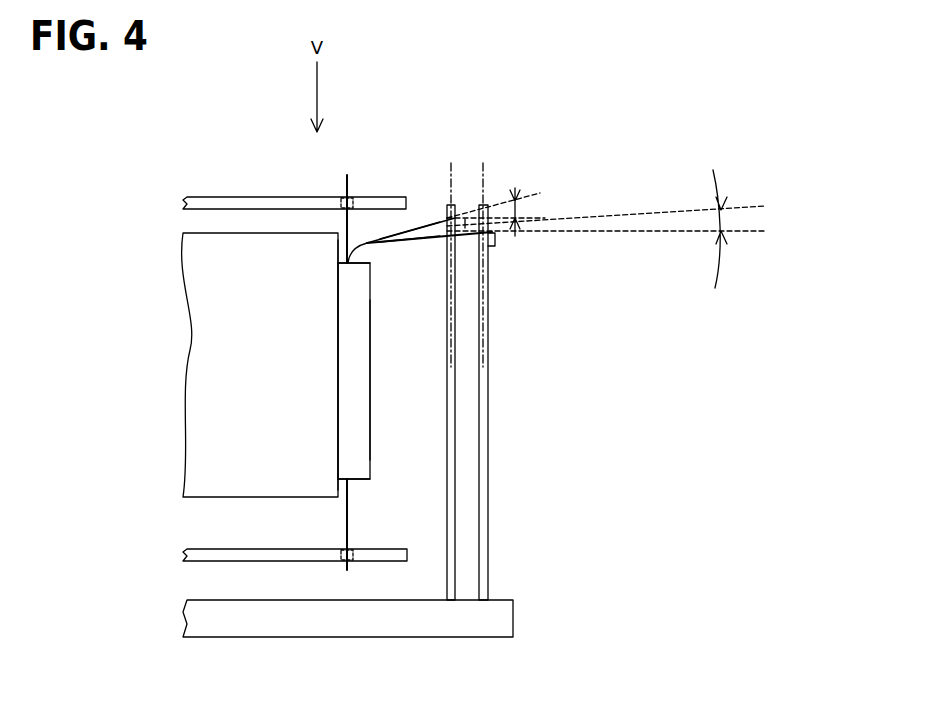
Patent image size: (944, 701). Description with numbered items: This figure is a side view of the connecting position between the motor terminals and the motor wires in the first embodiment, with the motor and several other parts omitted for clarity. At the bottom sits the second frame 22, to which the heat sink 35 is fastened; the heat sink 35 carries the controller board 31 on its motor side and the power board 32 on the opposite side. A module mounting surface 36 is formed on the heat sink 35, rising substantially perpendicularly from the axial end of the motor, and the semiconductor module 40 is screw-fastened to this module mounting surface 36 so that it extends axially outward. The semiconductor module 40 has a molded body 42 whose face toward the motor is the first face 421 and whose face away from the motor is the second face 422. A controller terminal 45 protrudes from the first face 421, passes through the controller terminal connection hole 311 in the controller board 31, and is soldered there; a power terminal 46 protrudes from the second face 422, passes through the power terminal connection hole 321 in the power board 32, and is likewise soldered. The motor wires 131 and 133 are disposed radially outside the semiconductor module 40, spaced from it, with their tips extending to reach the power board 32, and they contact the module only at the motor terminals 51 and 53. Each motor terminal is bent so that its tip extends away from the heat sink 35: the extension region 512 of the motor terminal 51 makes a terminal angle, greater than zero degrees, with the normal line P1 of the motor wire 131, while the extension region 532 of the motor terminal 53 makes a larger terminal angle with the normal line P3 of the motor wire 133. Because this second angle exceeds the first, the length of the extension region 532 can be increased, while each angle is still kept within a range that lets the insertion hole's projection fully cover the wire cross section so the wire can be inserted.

The second frame 22 is at (504, 617).
The controller board 31 is at (378, 558).
The controller terminal connection hole 311 is at (345, 553).
The power board 32 is at (216, 197).
The power terminal connection hole 321 is at (344, 203).
The heat sink 35 is at (258, 498).
The module mounting surface 36 is at (339, 406).
The semiconductor module 40 is at (384, 445).
The molded body 42 is at (360, 368).
The first face 421 is at (361, 480).
The second face 422 is at (352, 262).
The controller terminal 45 is at (349, 529).
The power terminal 46 is at (344, 184).
The motor terminal 51 is at (478, 240).
The extension region 512 is at (421, 240).
The motor terminal 53 is at (396, 221).
The extension region 532 is at (424, 228).
The motor wire 131 is at (487, 517).
The motor wire 133 is at (454, 474).
The normal line P1 is at (652, 234).
The normal line P3 is at (541, 222).